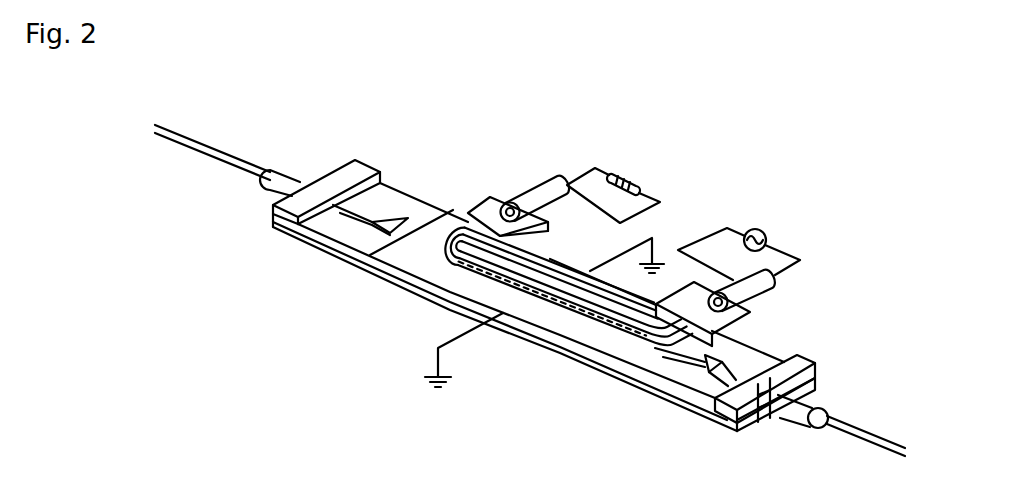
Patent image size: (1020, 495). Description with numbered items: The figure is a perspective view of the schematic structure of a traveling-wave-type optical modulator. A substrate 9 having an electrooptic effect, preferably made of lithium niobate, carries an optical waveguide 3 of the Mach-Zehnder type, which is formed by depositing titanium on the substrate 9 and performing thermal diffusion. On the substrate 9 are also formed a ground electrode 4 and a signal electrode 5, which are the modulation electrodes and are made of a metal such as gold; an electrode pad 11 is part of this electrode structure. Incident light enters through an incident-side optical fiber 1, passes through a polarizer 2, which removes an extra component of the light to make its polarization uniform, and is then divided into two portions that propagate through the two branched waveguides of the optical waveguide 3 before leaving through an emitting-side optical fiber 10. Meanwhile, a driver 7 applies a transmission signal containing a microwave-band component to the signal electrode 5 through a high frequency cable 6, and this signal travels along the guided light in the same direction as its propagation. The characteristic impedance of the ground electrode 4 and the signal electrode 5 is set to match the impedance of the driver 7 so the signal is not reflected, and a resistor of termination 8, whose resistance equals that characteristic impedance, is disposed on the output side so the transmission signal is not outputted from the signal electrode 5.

The incident-side optical fiber 1 is at (850, 422).
The polarizer 2 is at (723, 428).
The optical waveguide 3 is at (718, 352).
The ground electrode 4 is at (585, 258).
The signal electrode 5 is at (473, 271).
The high frequency cable 6 is at (530, 195).
The driver 7 is at (767, 235).
The resistor of termination 8 is at (633, 184).
The substrate 9 is at (327, 230).
The emitting-side optical fiber 10 is at (247, 160).
The electrode pad 11 is at (475, 218).